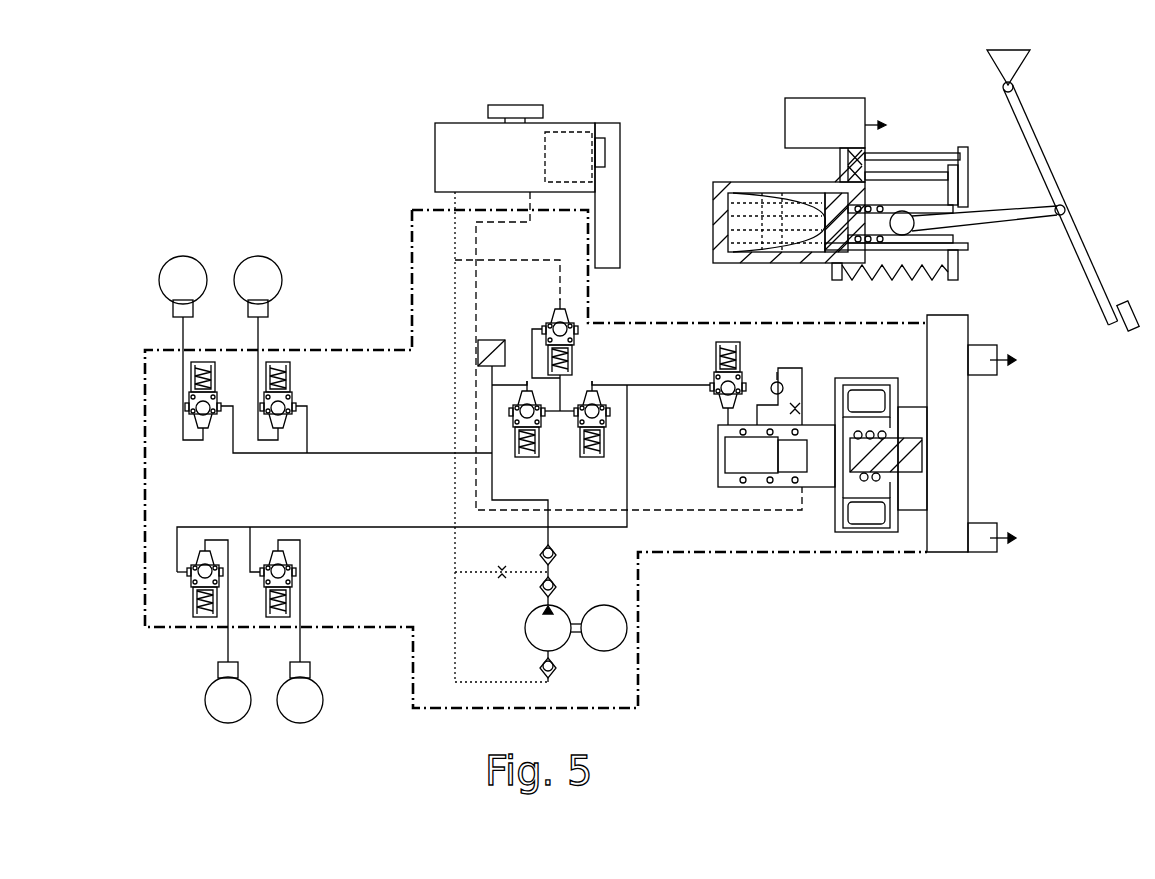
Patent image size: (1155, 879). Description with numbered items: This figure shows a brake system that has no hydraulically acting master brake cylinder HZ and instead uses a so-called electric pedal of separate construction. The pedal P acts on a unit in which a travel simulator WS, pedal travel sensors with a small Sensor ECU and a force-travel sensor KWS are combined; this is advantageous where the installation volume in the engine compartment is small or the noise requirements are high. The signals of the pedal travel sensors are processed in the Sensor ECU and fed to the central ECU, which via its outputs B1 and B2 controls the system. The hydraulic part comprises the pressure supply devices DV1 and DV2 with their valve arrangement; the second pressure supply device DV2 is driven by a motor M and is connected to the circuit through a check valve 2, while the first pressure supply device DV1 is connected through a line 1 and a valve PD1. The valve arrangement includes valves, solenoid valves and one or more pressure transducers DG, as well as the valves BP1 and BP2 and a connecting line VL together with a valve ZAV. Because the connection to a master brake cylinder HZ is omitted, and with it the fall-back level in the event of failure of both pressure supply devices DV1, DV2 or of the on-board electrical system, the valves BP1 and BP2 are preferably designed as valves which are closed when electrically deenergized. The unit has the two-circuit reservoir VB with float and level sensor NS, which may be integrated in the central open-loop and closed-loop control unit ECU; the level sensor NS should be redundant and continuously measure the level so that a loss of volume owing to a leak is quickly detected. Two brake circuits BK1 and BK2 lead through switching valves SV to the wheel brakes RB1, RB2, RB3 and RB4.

The reservoir VB is at (470, 122).
The level sensor NS is at (605, 152).
The central open-loop and closed-loop control unit ECU is at (610, 242).
The wheel brake 1 RB1 is at (232, 707).
The wheel brake 2 RB2 is at (303, 708).
The wheel brake 3 RB3 is at (188, 268).
The wheel brake 4 RB4 is at (248, 267).
The switching valves SV is at (268, 372).
The brake circuit 1 BK1 is at (420, 528).
The brake circuit 2 BK2 is at (270, 452).
The pressure transducer DG is at (500, 336).
The supply valve ZAV is at (552, 320).
The connecting line VL is at (566, 410).
The valve BP1 is at (592, 434).
The valve BP2 is at (528, 434).
The pressure relief valve PD1 is at (720, 384).
The hydraulic line 1 is at (657, 388).
The check valve 2 is at (550, 540).
The pressure supply device DV2 is at (605, 650).
The electric motor M is at (604, 628).
The pressure supply device DV1 is at (840, 533).
The element central ECU is at (950, 458).
The brake circuit output 1 B1 is at (1010, 359).
The brake circuit output 2 B2 is at (1010, 537).
The sensor ECU Sensor ECU is at (835, 123).
The master brake cylinder HZ is at (915, 252).
The travel simulator WS is at (773, 238).
The force-travel sensor KWS is at (905, 205).
The brake pedal P is at (1066, 210).